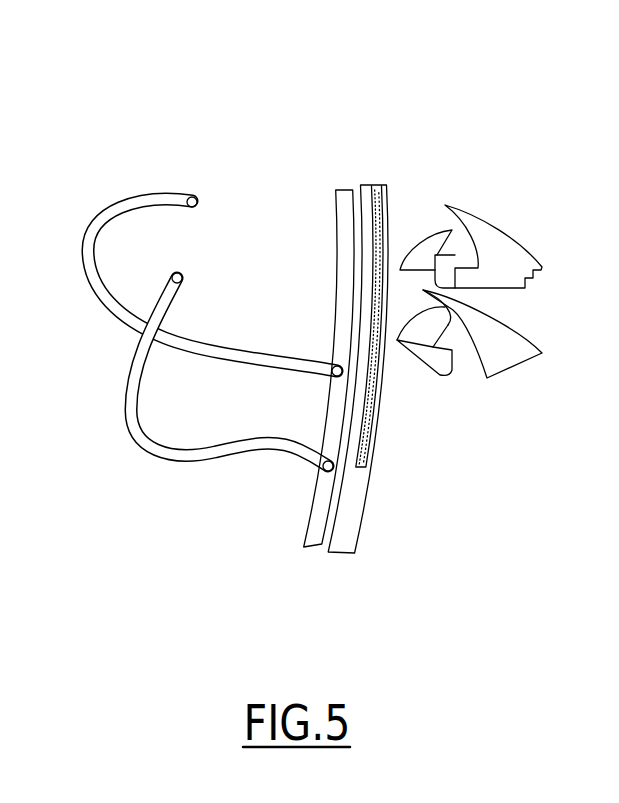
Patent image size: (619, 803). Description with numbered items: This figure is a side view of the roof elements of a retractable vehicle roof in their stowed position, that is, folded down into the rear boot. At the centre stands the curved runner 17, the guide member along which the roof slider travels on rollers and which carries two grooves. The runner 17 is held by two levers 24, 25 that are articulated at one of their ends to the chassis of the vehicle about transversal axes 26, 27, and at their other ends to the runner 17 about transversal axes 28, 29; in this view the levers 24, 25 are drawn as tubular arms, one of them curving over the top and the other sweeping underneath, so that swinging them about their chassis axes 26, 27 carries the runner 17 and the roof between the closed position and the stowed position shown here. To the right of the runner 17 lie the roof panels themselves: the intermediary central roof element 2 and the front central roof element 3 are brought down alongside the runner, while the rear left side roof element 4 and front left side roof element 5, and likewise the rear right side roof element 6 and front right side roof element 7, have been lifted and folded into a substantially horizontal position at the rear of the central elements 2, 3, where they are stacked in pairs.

The intermediary central roof element 2 is at (387, 193).
The front central roof element 3 is at (361, 186).
The rear left side roof element 4 is at (500, 245).
The front left side roof element 5 is at (422, 253).
The rear right side roof element 6 is at (505, 360).
The front right side roof element 7 is at (425, 353).
The runner 17 is at (312, 540).
The lever 24 is at (233, 352).
The lever 25 is at (204, 460).
The transversal axis 26 is at (182, 273).
The transversal axis 27 is at (197, 197).
The axis 28 is at (323, 470).
The axis 29 is at (333, 362).